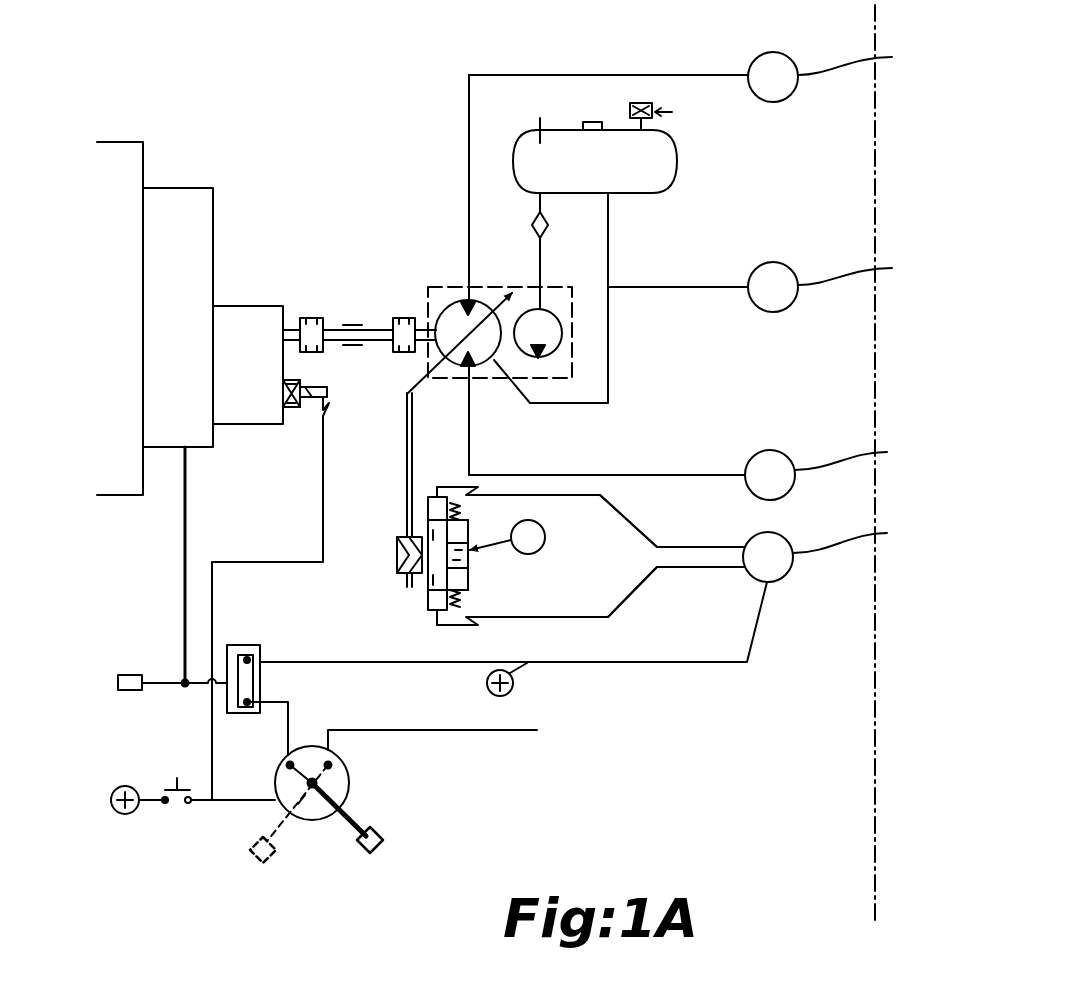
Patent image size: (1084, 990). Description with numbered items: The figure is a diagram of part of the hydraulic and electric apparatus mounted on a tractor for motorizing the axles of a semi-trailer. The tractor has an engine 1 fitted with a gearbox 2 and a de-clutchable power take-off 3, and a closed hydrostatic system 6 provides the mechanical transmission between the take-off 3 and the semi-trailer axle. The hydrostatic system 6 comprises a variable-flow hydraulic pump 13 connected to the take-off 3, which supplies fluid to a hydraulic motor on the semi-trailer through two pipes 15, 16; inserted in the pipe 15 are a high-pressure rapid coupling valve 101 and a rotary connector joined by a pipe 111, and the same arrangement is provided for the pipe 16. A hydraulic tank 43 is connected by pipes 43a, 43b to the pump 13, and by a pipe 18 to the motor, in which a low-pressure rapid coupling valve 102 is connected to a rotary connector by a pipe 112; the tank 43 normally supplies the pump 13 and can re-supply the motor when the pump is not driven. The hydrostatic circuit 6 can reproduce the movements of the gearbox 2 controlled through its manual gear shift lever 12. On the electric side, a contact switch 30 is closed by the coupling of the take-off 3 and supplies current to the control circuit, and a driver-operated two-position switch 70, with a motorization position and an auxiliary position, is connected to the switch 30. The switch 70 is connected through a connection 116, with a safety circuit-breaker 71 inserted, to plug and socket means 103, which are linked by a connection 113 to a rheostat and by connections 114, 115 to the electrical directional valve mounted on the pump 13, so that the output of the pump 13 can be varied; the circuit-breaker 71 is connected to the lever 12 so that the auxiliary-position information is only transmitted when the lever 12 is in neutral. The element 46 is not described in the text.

The engine 1 is at (122, 162).
The gearbox 2 is at (177, 208).
The de-clutchable power take-off 3 is at (246, 328).
The closed hydrostatic system 6 is at (527, 58).
The manual gear shift lever 12 is at (131, 672).
The variable-flow hydraulic pump 13 is at (432, 286).
The pipe 15 is at (723, 75).
The pipe 16 is at (714, 456).
The pipe 18 is at (726, 268).
The contact switch 30 is at (177, 778).
The hydraulic tank 43 is at (595, 148).
The pipe 43a is at (540, 260).
The pipe 43b is at (608, 252).
The level indicator 46 is at (545, 115).
The switch 70 is at (350, 792).
The safety circuit-breaker 71 is at (258, 648).
The rapid coupling valve (high pressure) 101 is at (771, 276).
The rapid coupling valve (low pressure) 102 is at (773, 287).
The plug and socket means 103 is at (768, 557).
The pipe 111 is at (854, 57).
The pipe 112 is at (842, 268).
The connection 113 is at (838, 534).
The connection 114 is at (722, 526).
The connection 115 is at (726, 570).
The connection 116 is at (706, 652).